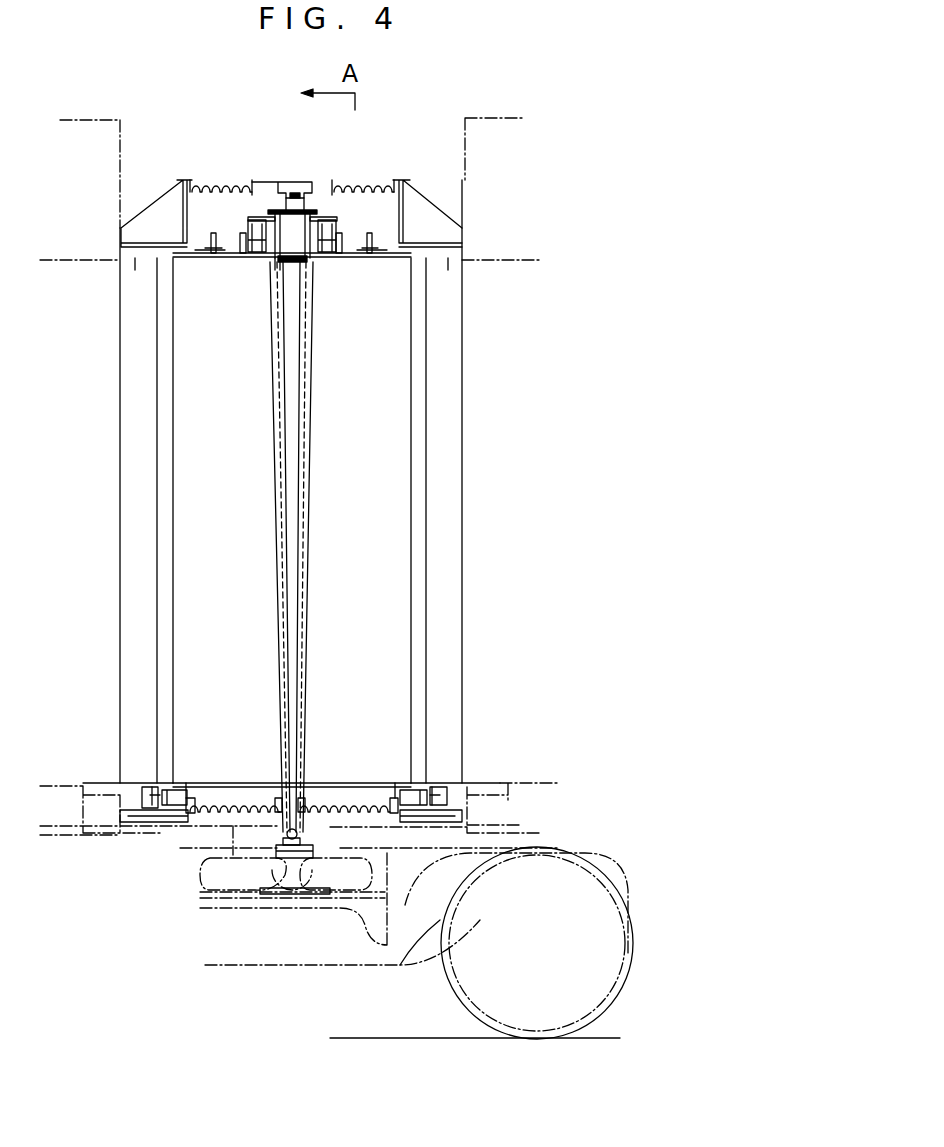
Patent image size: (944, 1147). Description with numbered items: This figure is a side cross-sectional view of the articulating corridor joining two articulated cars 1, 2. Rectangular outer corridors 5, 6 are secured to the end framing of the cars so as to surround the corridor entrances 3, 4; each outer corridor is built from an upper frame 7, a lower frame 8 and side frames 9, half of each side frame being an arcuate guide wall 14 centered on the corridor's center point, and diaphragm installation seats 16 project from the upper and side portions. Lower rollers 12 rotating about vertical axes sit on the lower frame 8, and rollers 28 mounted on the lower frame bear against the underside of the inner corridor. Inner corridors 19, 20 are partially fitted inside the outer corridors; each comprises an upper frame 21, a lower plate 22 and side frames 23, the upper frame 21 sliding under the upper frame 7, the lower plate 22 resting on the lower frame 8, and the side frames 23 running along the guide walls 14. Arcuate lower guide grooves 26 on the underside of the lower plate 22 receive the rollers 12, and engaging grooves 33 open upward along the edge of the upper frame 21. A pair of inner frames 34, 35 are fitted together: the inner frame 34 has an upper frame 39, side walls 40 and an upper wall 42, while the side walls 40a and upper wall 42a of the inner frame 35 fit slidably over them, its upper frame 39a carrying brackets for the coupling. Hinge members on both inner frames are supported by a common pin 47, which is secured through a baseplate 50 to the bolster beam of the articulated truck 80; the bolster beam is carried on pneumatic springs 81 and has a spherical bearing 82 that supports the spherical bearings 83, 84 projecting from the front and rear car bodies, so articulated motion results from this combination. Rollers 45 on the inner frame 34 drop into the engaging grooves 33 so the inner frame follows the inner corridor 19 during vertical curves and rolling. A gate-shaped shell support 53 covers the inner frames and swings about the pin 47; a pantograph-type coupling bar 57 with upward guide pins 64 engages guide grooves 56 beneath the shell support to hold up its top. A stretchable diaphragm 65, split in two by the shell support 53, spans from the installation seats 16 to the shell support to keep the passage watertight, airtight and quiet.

The articulated car 1 is at (516, 125).
The articulated car 2 is at (103, 128).
The corridor entrance 3 is at (523, 262).
The corridor entrance 4 is at (82, 258).
The outer corridor 5 is at (440, 338).
The outer corridor 6 is at (140, 338).
The upper frame 7 is at (130, 258).
The lower frame 8 is at (137, 803).
The side frame 9 is at (137, 410).
The lower roller 12 is at (168, 797).
The arcuate guide wall 14 is at (160, 448).
The diaphragm installation seat 16 is at (208, 237).
The inner corridor 19 is at (380, 605).
The inner corridor 20 is at (195, 578).
The upper frame 21 is at (213, 255).
The lower plate 22 is at (235, 783).
The side frame 23 is at (185, 517).
The lower guide groove 26 is at (190, 790).
The roller 28 is at (148, 797).
The engaging groove 33 is at (232, 212).
The inner frame 34 is at (312, 433).
The inner frame 35 is at (270, 445).
The upper frame 39 is at (325, 245).
The upper frame 39a is at (258, 245).
The side wall 40 is at (305, 390).
The side wall 40a is at (275, 378).
The upper wall 42 is at (305, 265).
The upper wall 42a is at (276, 270).
The roller 45 is at (250, 222).
The common pin 47 is at (288, 828).
The baseplate 50 is at (300, 846).
The shell support 53 is at (296, 198).
The guide groove 56 is at (300, 200).
The coupling bar 57 is at (290, 193).
The guide pin 64 is at (312, 210).
The stretchable diaphragm 65 is at (210, 182).
The articulated truck 80 is at (442, 915).
The pneumatic spring 81 is at (380, 892).
The spherical bearing 82 is at (266, 896).
The spherical bearing 83 is at (245, 878).
The spherical bearing 84 is at (290, 896).